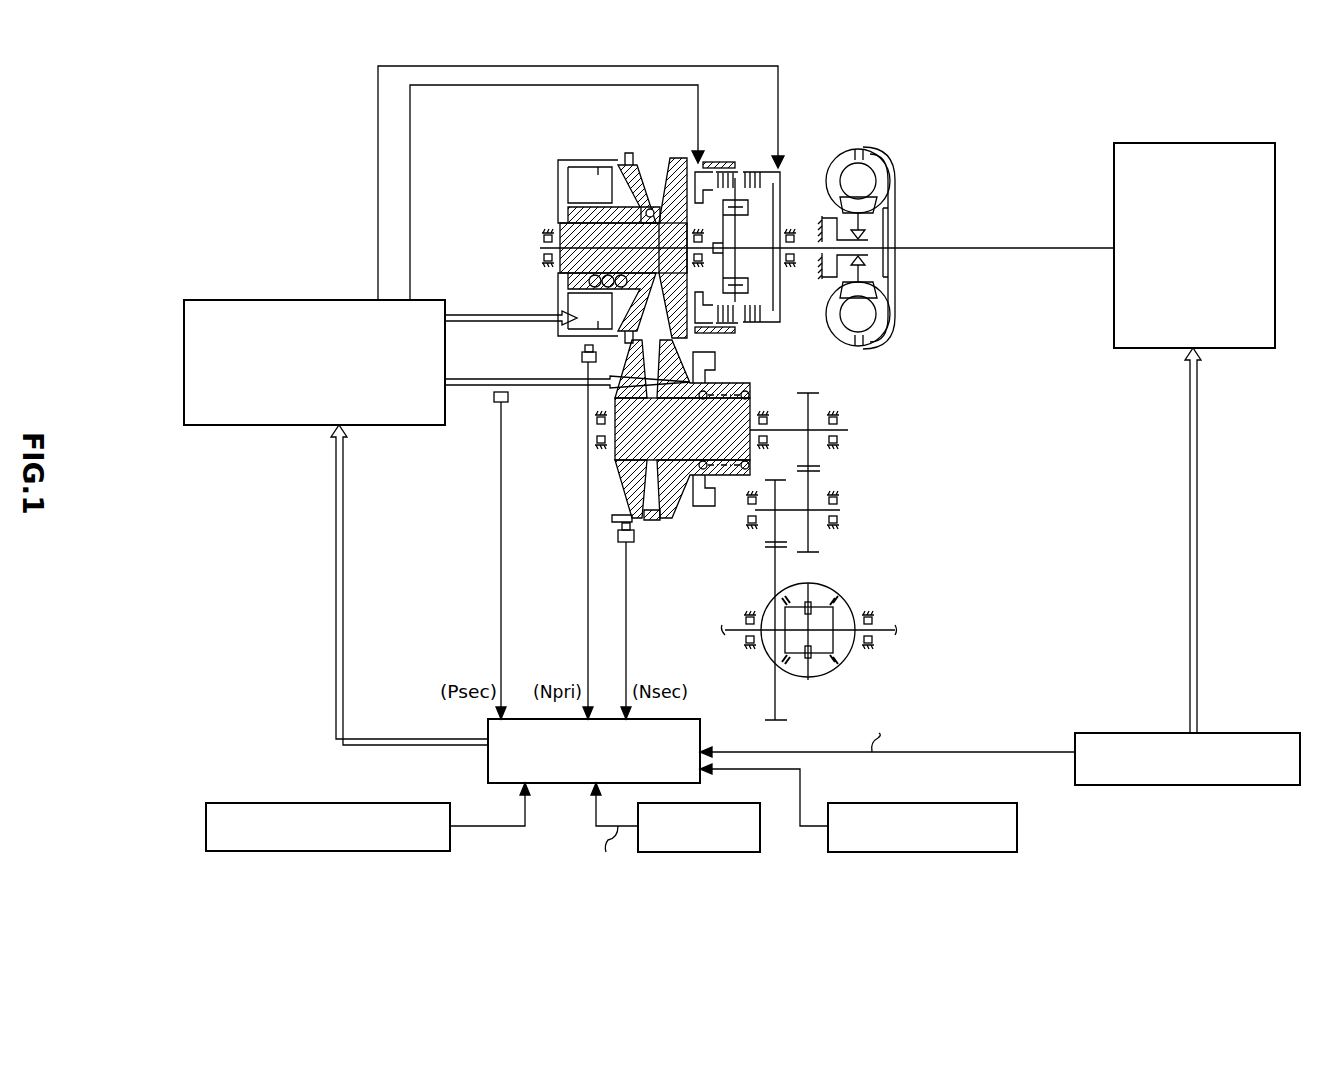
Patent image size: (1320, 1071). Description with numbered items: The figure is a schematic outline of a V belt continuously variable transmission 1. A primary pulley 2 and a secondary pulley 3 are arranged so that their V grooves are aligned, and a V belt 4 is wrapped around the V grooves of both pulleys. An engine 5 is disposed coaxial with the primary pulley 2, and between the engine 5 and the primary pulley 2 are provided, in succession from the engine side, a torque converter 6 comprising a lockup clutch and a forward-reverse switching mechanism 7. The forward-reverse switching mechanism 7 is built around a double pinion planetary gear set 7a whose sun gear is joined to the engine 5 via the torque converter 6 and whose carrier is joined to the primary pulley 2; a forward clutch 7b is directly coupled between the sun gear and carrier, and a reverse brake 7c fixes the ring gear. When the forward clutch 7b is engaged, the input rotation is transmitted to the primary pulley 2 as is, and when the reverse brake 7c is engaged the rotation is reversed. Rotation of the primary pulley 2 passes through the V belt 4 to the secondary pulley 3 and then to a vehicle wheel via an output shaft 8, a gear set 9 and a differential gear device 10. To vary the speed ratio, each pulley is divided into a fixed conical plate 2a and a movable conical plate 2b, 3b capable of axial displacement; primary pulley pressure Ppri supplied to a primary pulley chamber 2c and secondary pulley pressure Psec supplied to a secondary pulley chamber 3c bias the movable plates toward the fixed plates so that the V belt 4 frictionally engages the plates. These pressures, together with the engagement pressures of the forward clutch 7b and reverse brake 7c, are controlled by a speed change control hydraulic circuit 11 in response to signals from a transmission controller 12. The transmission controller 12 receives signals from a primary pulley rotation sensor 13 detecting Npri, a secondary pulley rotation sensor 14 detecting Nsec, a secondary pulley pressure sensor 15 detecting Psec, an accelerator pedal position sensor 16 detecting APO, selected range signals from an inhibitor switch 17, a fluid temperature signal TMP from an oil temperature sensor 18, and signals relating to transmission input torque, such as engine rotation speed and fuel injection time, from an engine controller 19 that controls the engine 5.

The V belt continuously variable transmission 1 is at (565, 146).
The primary pulley 2 is at (665, 146).
The fixed conical plate 2a is at (679, 157).
The movable conical plate 2b is at (627, 160).
The primary pulley chamber 2c is at (580, 188).
The secondary pulley 3 is at (714, 527).
The movable conical plate 3b is at (668, 537).
The secondary pulley chamber 3c is at (688, 510).
The V belt 4 is at (652, 207).
The engine 5 is at (1197, 143).
The torque converter 6 is at (860, 135).
The forward-reverse switching mechanism 7 is at (701, 160).
The double pinion planetary gear set 7a is at (743, 170).
The forward clutch 7b is at (761, 172).
The reverse brake 7c is at (737, 183).
The output shaft 8 is at (790, 428).
The gear set 9 is at (861, 455).
The differential gear device 10 is at (853, 583).
The speed change control hydraulic circuit 11 is at (318, 300).
The transmission controller 12 is at (488, 740).
The primary pulley rotation sensor 13 is at (582, 357).
The secondary pulley rotation sensor 14 is at (628, 556).
The secondary pulley pressure sensor 15 is at (497, 405).
The accelerator pedal position sensor 16 is at (338, 803).
The inhibitor switch 17 is at (715, 803).
The oil temperature sensor 18 is at (1017, 826).
The engine controller 19 is at (1233, 733).